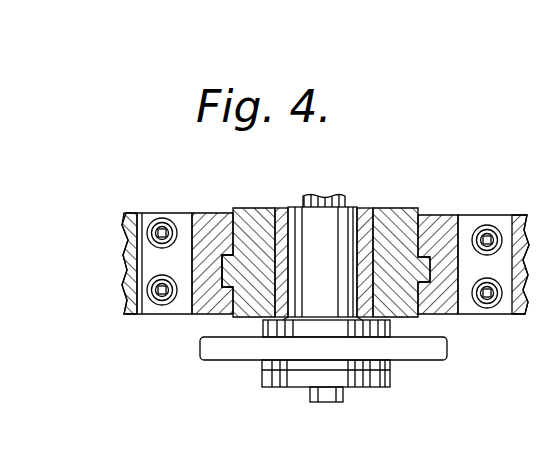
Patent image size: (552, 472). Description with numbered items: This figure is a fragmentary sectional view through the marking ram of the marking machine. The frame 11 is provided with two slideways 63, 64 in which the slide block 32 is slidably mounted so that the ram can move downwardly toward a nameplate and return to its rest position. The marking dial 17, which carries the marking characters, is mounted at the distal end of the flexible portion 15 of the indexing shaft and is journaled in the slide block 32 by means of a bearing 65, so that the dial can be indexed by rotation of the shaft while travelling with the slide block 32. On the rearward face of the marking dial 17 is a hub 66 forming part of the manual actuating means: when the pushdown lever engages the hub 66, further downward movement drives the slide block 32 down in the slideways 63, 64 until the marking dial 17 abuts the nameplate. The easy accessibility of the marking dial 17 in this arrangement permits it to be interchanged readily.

The frame 11 is at (211, 213).
The slide block 32 is at (253, 224).
The flexible portion 15 is at (323, 196).
The bearing 65 is at (368, 213).
The slideway 63 is at (425, 257).
The slideway 64 is at (222, 290).
The hub 66 is at (392, 335).
The marking dial 17 is at (403, 362).